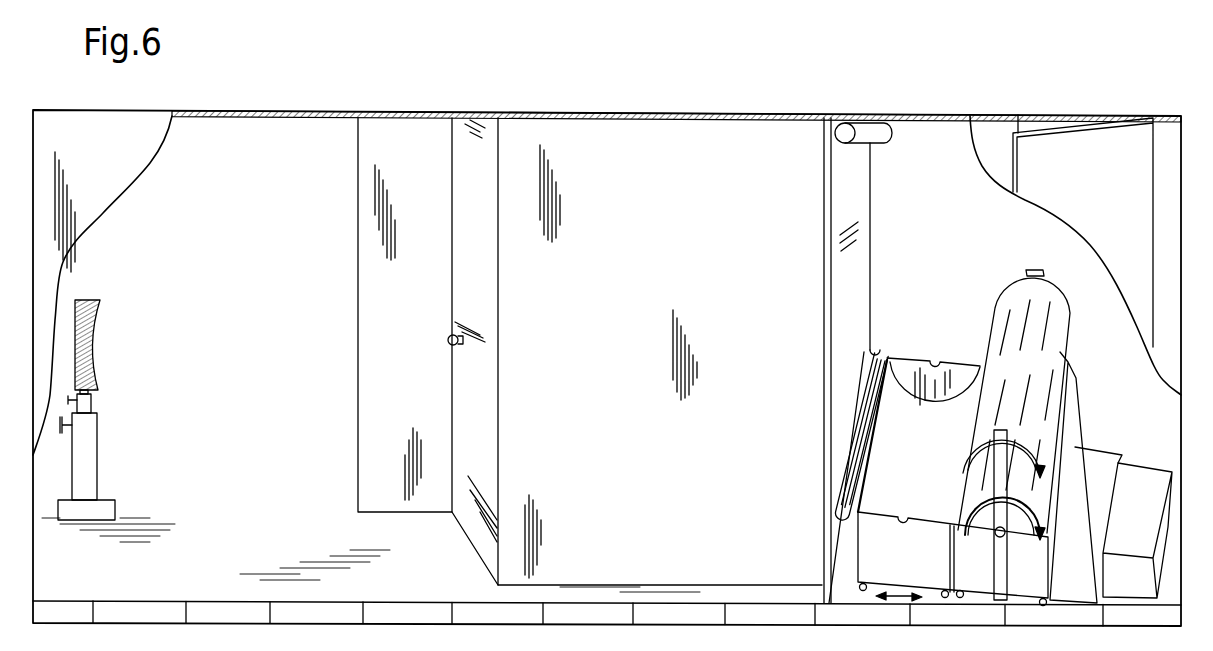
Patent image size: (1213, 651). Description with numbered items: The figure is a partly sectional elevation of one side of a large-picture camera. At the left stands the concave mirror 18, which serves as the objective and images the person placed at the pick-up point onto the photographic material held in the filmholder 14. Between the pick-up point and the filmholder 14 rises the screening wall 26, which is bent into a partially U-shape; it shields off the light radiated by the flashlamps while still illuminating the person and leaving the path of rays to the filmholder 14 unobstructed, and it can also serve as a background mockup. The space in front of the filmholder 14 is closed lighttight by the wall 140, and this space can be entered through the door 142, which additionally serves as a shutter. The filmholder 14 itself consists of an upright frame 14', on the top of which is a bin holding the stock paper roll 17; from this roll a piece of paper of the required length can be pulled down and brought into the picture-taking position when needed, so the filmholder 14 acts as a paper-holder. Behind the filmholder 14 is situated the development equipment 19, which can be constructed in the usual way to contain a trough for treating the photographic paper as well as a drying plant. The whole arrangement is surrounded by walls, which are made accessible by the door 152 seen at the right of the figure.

The filmholder 14 is at (819, 360).
The upright frame 14' is at (831, 476).
The stock paper roll 17 is at (867, 128).
The concave mirror 18 is at (98, 352).
The development equipment 19 is at (964, 438).
The screening wall 26 is at (372, 278).
The wall 140 is at (667, 281).
The door 142 is at (472, 520).
The door 152 is at (1098, 137).